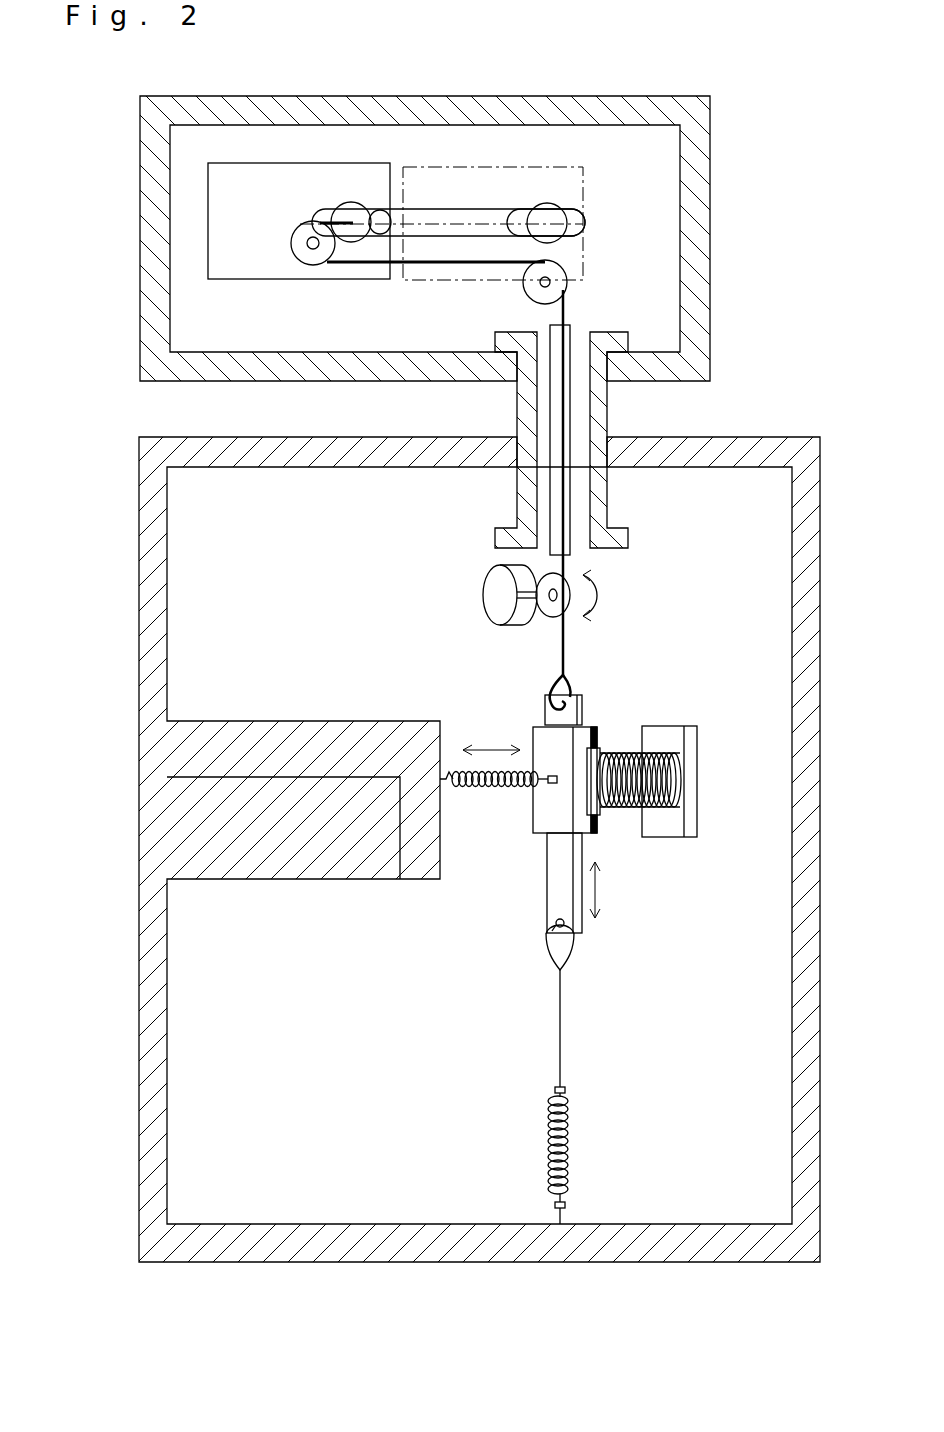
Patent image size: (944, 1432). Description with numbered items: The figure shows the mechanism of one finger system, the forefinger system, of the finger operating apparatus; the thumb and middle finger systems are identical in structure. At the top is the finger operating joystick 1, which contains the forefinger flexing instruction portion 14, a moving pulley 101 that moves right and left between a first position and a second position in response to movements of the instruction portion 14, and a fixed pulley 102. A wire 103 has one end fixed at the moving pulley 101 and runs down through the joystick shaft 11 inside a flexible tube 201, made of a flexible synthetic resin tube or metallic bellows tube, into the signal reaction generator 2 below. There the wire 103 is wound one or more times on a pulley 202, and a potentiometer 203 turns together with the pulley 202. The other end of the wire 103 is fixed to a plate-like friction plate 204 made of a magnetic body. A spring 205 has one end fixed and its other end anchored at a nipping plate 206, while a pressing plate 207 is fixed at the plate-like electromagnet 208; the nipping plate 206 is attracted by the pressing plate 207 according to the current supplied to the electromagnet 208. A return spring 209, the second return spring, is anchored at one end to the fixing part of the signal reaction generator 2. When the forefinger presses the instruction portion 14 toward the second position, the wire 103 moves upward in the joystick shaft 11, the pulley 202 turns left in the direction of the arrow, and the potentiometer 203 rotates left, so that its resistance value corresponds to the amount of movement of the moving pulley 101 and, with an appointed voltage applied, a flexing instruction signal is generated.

The finger operating joystick 1 is at (578, 97).
The signal reaction generator 2 is at (773, 440).
The joystick shaft 11 is at (607, 408).
The forefinger flexing instruction portion 14 is at (273, 163).
The moving pulley 101 is at (352, 212).
The fixed pulley 102 is at (306, 256).
The wire 103 is at (447, 267).
The flexible tube 201 is at (573, 552).
The pulley 202 is at (548, 617).
The potentiometer 203 is at (483, 603).
The friction plate 204 is at (584, 705).
The spring 205 is at (490, 790).
The nipping plate 206 is at (542, 820).
The pressing plate 207 is at (593, 812).
The electromagnet 208 is at (650, 783).
The return spring 209 is at (565, 1157).